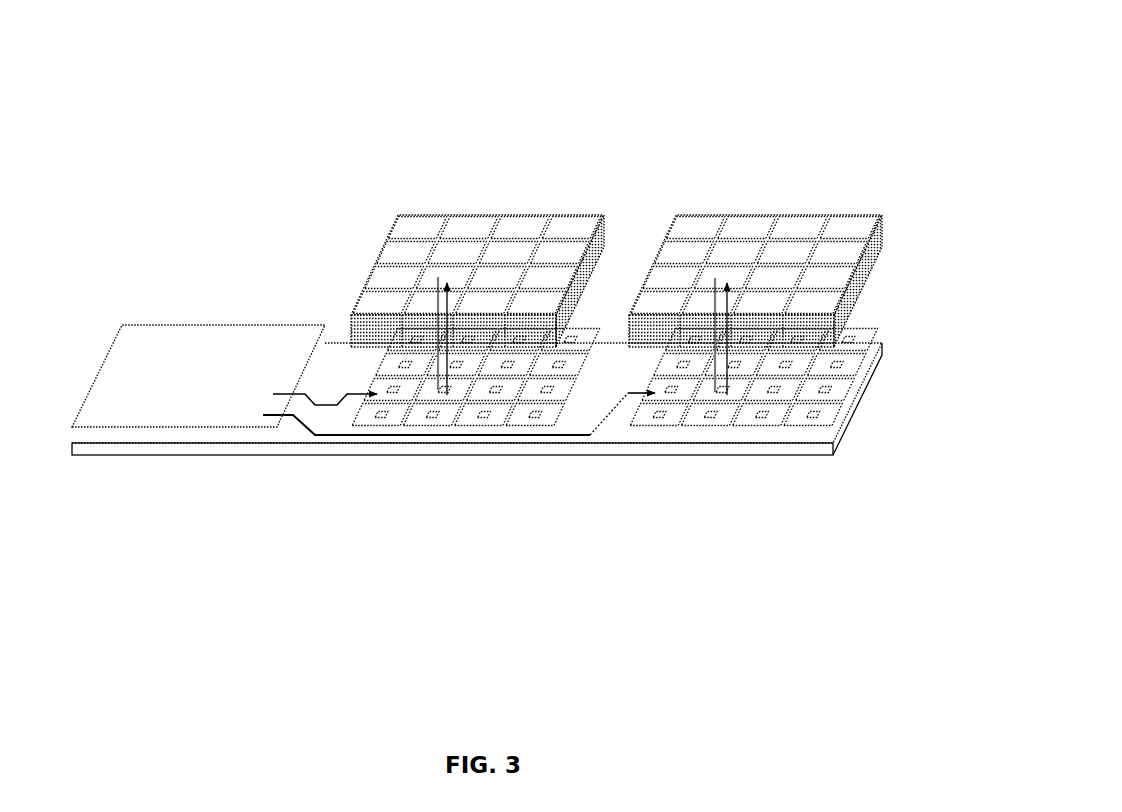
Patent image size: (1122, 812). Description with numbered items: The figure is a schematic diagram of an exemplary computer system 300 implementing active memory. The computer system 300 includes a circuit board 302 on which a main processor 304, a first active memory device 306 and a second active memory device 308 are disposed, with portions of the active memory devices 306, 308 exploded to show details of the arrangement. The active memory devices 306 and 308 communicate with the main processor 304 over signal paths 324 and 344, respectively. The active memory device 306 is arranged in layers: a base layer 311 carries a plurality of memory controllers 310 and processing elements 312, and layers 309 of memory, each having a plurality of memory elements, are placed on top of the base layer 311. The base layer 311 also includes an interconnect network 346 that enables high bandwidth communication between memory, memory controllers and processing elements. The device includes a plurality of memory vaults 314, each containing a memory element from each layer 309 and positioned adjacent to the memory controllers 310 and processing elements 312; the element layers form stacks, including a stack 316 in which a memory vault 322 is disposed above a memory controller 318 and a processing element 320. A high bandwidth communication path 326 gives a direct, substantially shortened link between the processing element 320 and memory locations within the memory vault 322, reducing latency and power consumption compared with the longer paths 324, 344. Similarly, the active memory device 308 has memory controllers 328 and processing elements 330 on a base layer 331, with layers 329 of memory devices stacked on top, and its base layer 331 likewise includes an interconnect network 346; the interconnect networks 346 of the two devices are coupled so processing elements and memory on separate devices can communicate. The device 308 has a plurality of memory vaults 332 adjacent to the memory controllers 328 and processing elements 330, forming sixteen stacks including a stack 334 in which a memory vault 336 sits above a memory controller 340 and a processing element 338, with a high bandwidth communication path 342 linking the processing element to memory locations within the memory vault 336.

The computer system 300 is at (376, 84).
The circuit board 302 is at (218, 450).
The main processor 304 is at (198, 376).
The active memory device 306 is at (522, 211).
The active memory device 308 is at (742, 211).
The layers 309 is at (352, 313).
The memory controllers 310 is at (497, 395).
The base layer 311 is at (463, 433).
The processing elements 312 is at (560, 395).
The memory vaults 314 is at (577, 248).
The stack 316 is at (420, 278).
The memory controller 318 is at (445, 392).
The processing element 320 is at (455, 395).
The memory vault 322 is at (428, 270).
The signal path 324 is at (345, 395).
The high bandwidth communication path 326 is at (437, 297).
The memory controllers 328 is at (775, 395).
The layers 329 is at (880, 211).
The processing elements 330 is at (838, 395).
The base layer 331 is at (735, 433).
The memory vaults 332 is at (853, 228).
The stack 334 is at (730, 268).
The memory vault 336 is at (712, 265).
The processing element 338 is at (727, 396).
The memory controller 340 is at (722, 393).
The high bandwidth communication path 342 is at (713, 290).
The signal path 344 is at (327, 436).
The interconnect network 346 is at (660, 428).